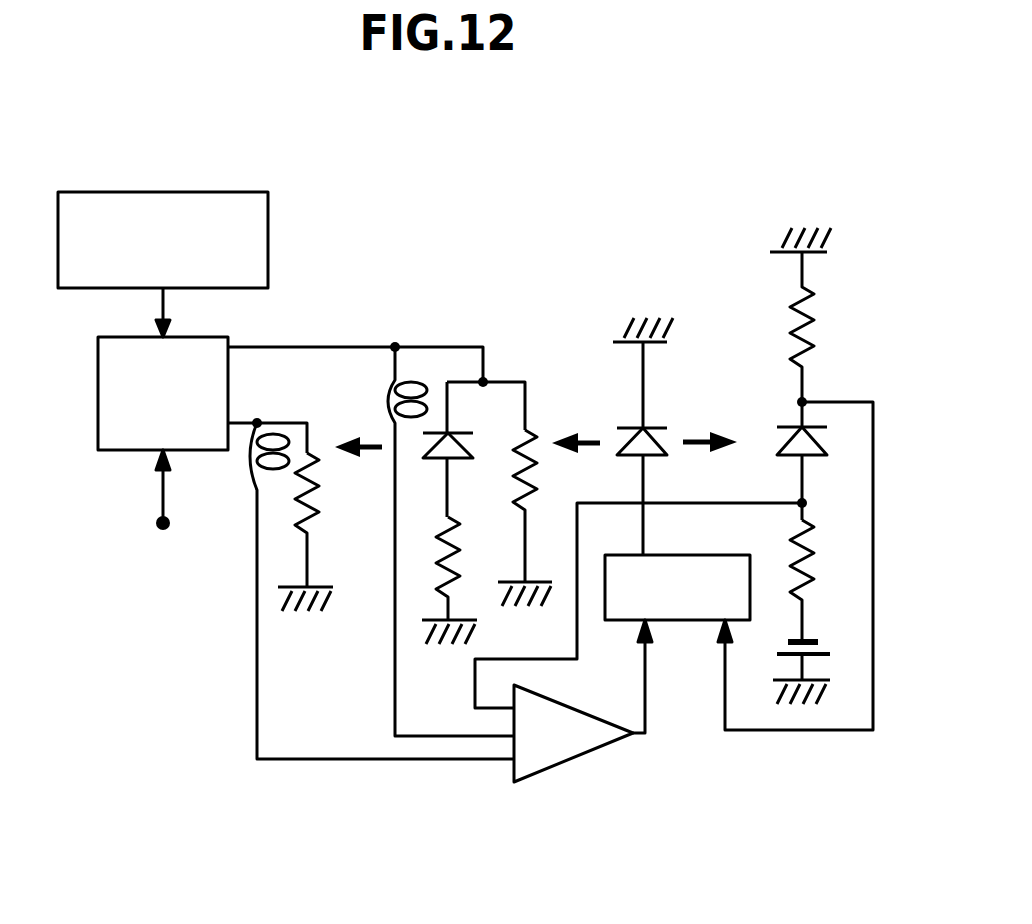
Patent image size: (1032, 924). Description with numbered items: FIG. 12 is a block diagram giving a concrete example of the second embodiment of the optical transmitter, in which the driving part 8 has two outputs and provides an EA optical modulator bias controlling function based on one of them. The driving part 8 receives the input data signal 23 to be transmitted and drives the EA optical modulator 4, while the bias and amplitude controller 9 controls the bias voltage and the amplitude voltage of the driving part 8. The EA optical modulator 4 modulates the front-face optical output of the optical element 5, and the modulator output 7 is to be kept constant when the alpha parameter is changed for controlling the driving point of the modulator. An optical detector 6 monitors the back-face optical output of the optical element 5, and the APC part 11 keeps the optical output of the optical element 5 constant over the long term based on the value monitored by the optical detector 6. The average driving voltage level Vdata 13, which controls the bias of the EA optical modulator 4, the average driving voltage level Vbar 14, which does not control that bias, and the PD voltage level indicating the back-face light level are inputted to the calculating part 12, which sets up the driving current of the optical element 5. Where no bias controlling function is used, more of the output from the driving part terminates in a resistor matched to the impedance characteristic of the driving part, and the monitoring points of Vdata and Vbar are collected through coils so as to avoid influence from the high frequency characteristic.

The EA optical modulator 4 is at (476, 422).
The optical element 5 is at (655, 388).
The optical detector 6 is at (813, 412).
The modulator output 7 is at (343, 430).
The driving part 8 is at (118, 452).
The bias and amplitude controller 9 is at (270, 232).
The APC part 11 is at (700, 622).
The calculating part 12 is at (546, 770).
The average driving voltage level Vdata 13 is at (397, 345).
The average driving voltage level Vbar 14 is at (302, 347).
The data signal 23 is at (158, 525).